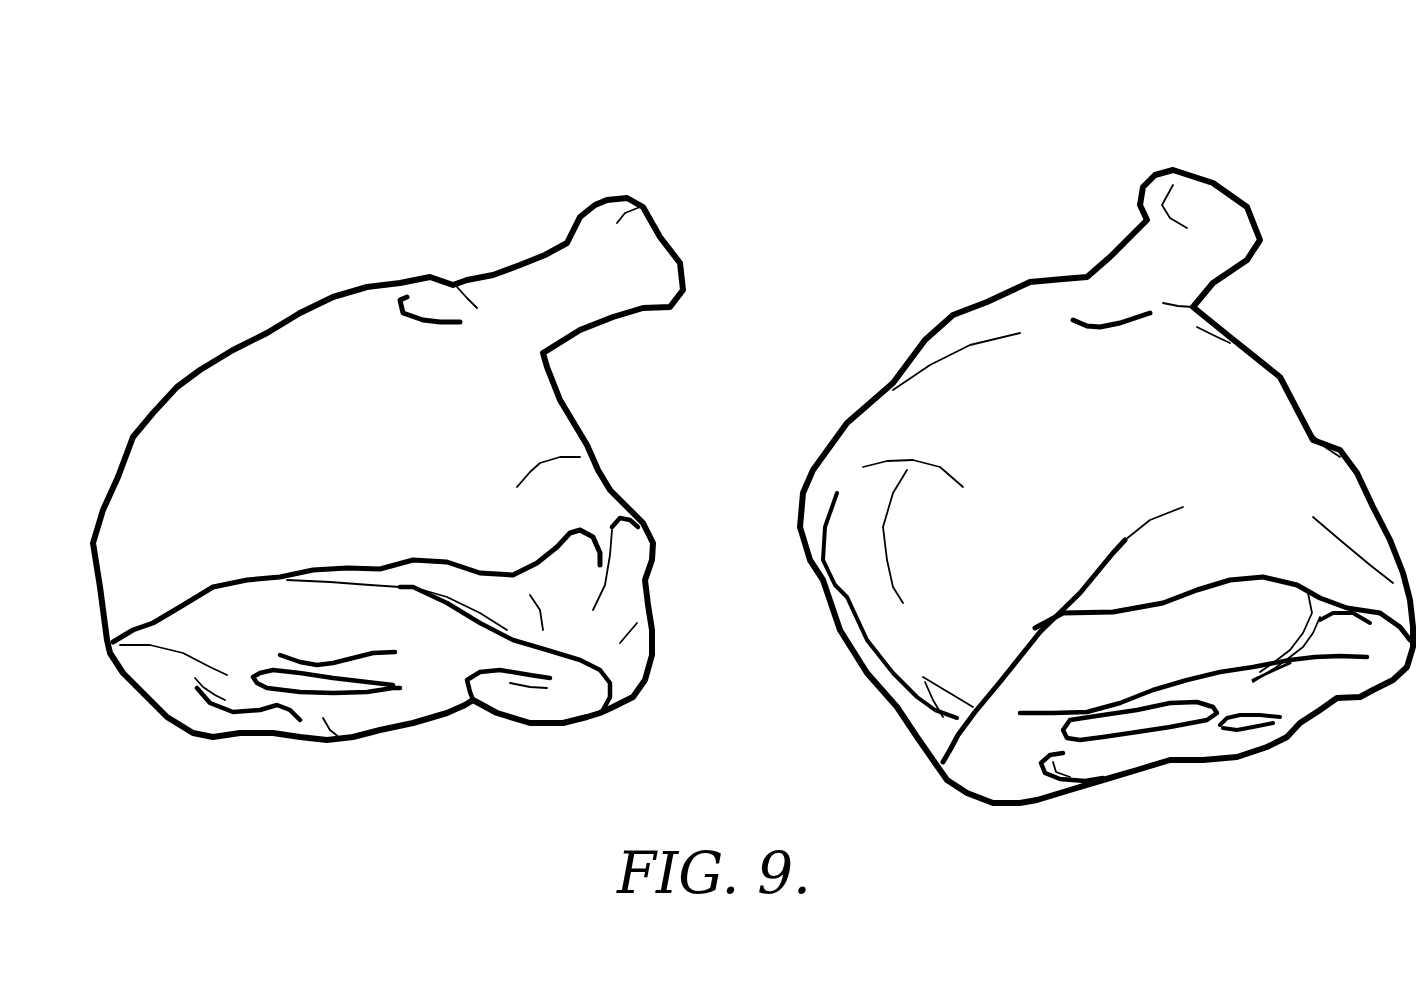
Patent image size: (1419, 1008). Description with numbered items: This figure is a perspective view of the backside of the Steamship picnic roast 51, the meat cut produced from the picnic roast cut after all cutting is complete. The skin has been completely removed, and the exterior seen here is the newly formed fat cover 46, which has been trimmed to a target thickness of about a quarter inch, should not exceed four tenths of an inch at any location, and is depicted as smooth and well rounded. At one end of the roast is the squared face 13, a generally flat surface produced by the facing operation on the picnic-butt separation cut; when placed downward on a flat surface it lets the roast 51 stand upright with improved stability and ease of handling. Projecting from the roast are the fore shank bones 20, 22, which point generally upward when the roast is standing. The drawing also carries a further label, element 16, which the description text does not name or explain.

The squared face 13 is at (1027, 747).
The thigh portion 16 is at (370, 388).
The fore shank bone 20 is at (640, 204).
The fore shank bone 22 is at (1150, 212).
The fat cover 46 is at (580, 457).
The Steamship picnic roast 51 is at (625, 81).